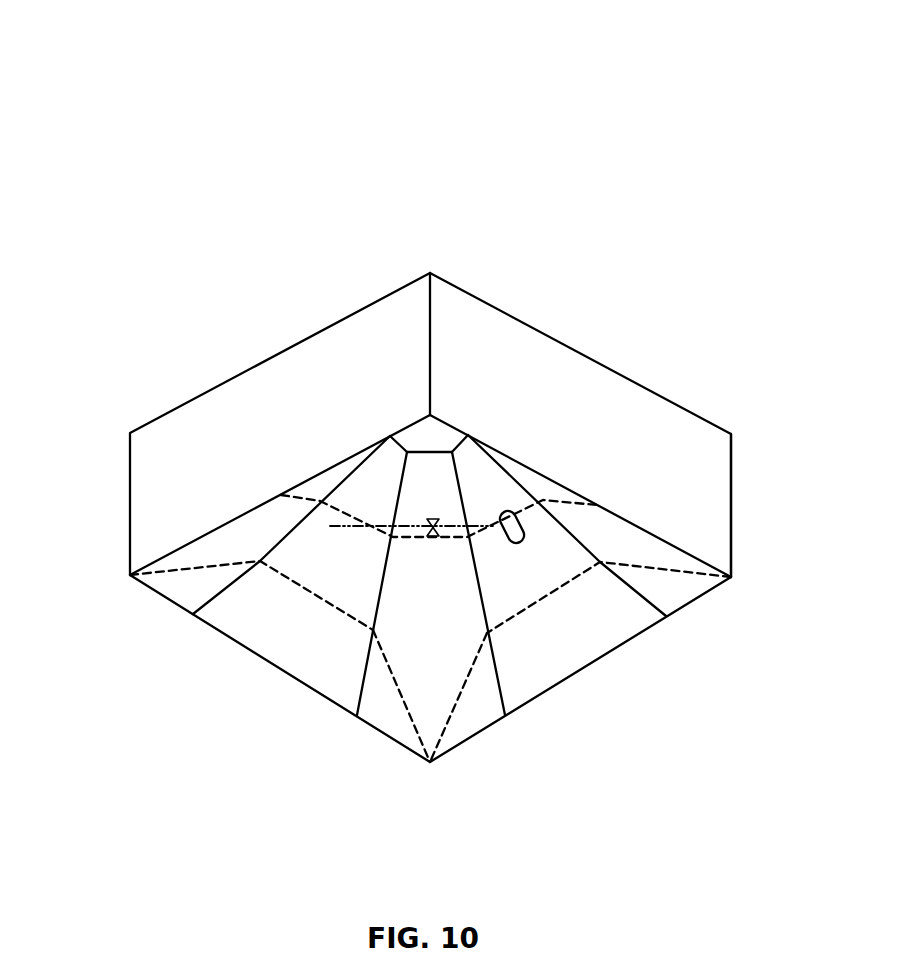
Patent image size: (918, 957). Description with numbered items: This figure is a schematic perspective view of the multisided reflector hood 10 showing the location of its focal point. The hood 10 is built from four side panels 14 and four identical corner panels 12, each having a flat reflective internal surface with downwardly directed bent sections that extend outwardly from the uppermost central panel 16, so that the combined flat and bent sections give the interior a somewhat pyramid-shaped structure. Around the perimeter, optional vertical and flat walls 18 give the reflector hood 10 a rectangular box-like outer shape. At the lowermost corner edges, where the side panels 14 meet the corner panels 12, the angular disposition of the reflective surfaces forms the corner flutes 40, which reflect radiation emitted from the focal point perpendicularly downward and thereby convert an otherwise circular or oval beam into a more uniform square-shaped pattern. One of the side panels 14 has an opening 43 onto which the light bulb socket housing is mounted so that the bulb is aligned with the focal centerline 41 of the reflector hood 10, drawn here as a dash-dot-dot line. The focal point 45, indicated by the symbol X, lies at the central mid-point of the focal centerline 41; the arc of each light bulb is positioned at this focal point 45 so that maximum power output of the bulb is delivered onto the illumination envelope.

The reflector hood 10 is at (694, 311).
The corner panels 12 is at (430, 655).
The side panels 14 is at (543, 575).
The central panel 16 is at (407, 440).
The vertical and flat walls 18 is at (686, 471).
The corner flutes 40 is at (460, 768).
The focal centerline 41 is at (383, 527).
The opening 43 is at (508, 511).
The focal point 45 is at (436, 522).